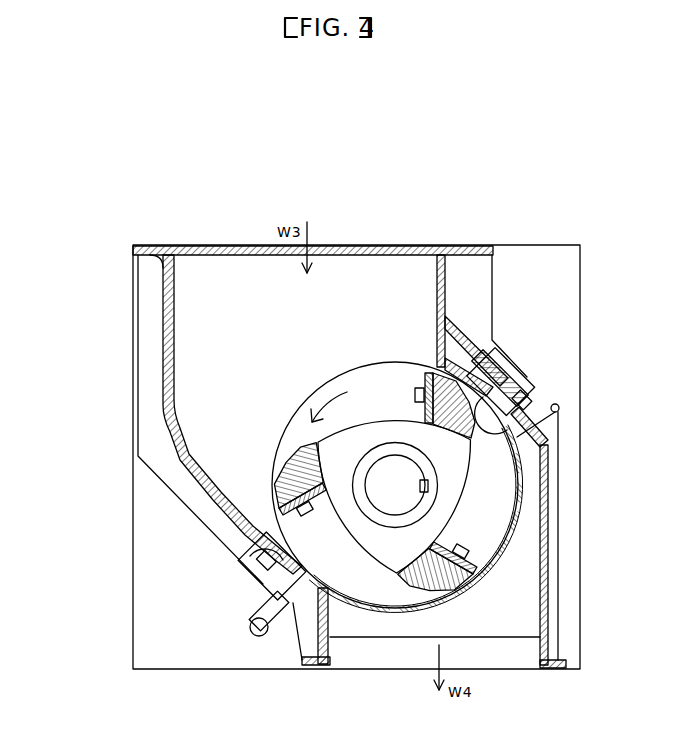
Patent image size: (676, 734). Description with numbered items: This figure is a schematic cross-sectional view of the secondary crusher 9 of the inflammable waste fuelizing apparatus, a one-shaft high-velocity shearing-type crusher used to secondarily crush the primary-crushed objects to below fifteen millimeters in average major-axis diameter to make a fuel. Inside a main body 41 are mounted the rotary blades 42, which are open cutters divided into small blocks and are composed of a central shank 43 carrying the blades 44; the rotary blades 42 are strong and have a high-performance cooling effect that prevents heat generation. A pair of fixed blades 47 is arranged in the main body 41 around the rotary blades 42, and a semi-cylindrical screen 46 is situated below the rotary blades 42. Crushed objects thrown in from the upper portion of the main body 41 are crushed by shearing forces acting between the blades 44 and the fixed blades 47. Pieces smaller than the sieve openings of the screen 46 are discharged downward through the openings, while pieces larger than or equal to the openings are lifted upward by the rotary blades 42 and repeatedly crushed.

The secondary crusher 9 is at (366, 106).
The main body 41 is at (163, 352).
The rotary blades 42 is at (402, 193).
The shank 43 is at (368, 421).
The blades 44 is at (417, 378).
The semi-cylindrical screen 46 is at (397, 613).
The fixed blades 47 is at (548, 432).